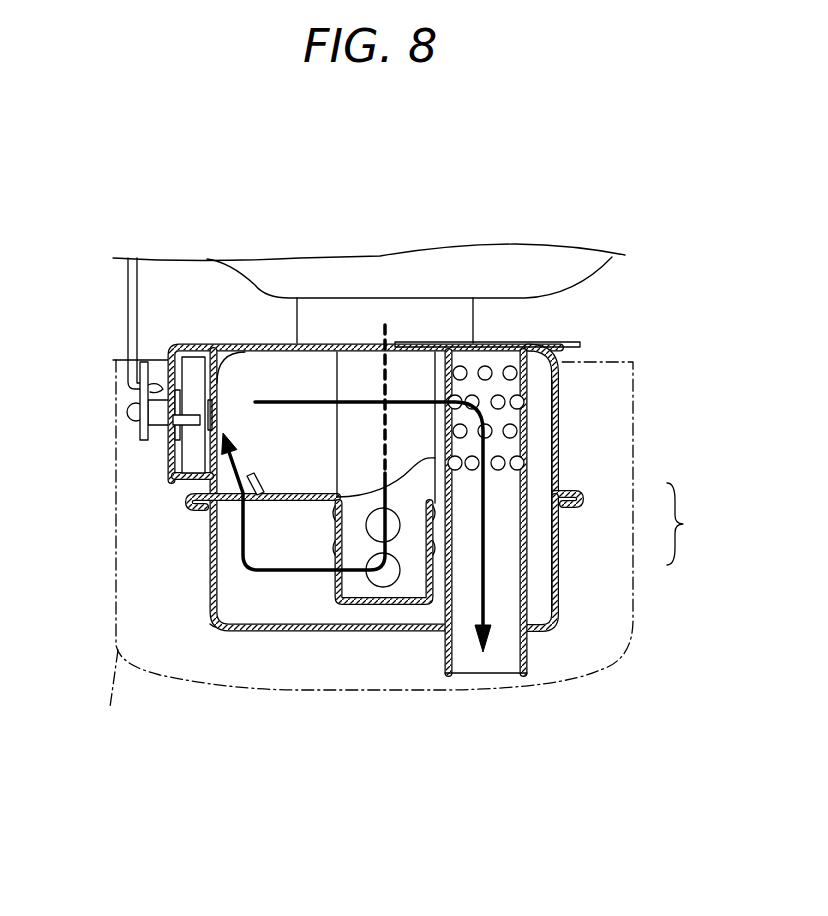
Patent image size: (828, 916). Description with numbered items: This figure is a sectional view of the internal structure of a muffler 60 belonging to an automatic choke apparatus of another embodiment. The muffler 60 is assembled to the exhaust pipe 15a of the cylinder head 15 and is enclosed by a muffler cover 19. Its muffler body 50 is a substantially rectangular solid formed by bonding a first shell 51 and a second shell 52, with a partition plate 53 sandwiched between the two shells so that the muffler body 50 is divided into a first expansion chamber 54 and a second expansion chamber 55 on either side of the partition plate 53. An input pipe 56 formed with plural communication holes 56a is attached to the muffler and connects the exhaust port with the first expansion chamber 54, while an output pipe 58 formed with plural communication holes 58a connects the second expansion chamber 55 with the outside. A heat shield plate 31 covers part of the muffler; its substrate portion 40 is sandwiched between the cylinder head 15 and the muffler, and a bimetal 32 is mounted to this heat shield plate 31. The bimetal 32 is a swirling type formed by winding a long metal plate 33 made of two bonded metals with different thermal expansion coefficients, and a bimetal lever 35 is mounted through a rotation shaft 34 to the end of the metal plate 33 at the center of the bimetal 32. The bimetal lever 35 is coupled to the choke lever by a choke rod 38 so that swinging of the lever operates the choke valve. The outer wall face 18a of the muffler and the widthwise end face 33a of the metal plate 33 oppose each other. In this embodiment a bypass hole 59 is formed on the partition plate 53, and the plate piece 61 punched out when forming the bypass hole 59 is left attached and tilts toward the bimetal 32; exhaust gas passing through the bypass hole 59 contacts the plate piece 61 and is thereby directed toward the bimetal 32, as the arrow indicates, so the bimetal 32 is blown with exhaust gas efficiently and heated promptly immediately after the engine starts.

The cylinder head 15 is at (490, 260).
The exhaust pipe 15a is at (433, 317).
The outer wall face 18a is at (200, 443).
The muffler cover 19 is at (362, 555).
The heat shield plate 31 is at (580, 335).
The bimetal 32 is at (172, 490).
The metal plate 33 is at (192, 362).
The end face 33a is at (215, 363).
The rotation shaft 34 is at (133, 407).
The bimetal lever 35 is at (140, 433).
The choke rod 38 is at (132, 317).
The substrate portion 40 is at (557, 343).
The muffler body 50 is at (691, 524).
The first shell 51 is at (553, 543).
The second shell 52 is at (553, 462).
The partition plate 53 is at (537, 505).
The first expansion chamber 54 is at (288, 613).
The second expansion chamber 55 is at (267, 370).
The input pipe 56 is at (369, 619).
The communication holes 56a is at (392, 577).
The output pipe 58 is at (471, 562).
The communication holes 58a is at (503, 410).
The bypass hole 59 is at (232, 503).
The muffler 60 is at (210, 637).
The plate piece 61 is at (262, 487).